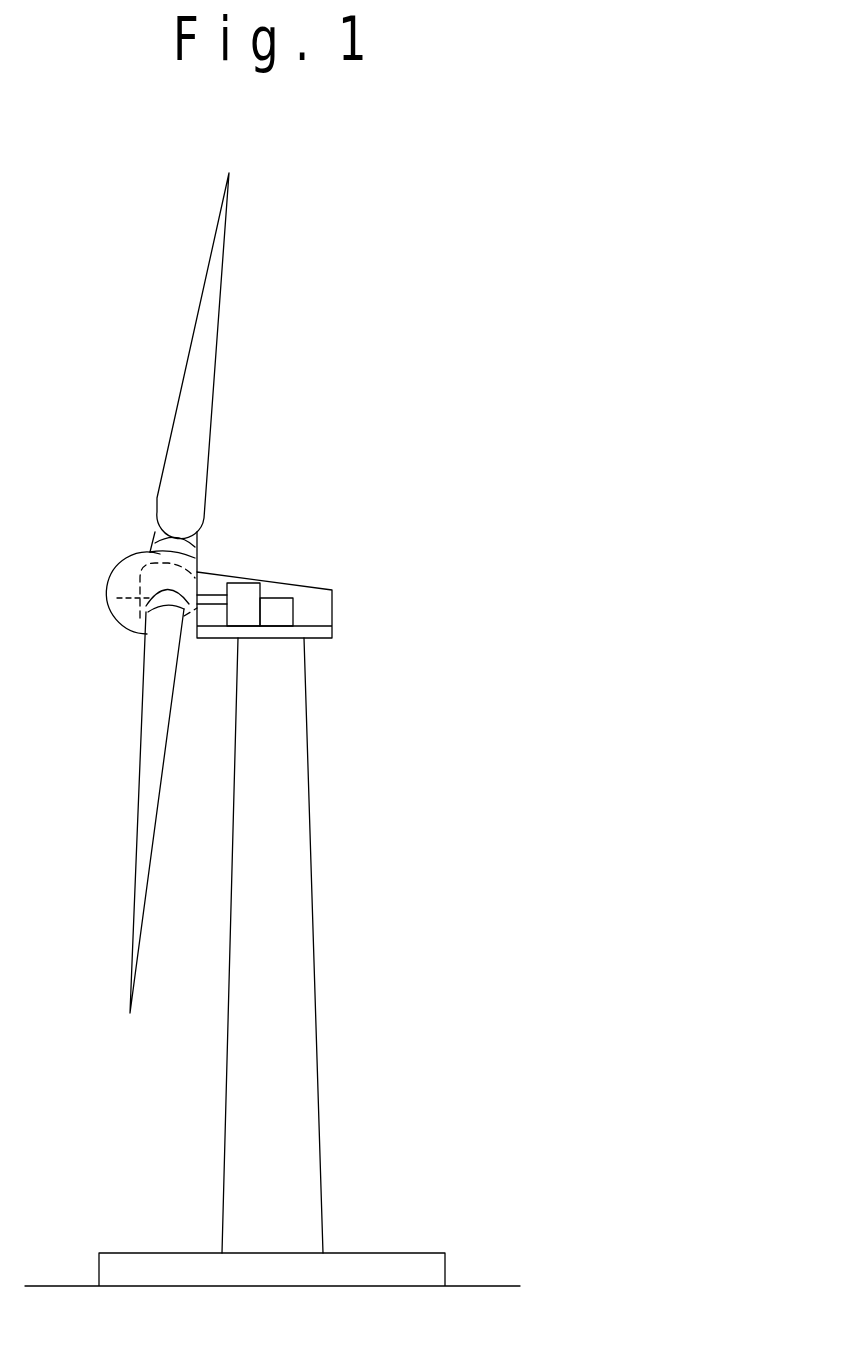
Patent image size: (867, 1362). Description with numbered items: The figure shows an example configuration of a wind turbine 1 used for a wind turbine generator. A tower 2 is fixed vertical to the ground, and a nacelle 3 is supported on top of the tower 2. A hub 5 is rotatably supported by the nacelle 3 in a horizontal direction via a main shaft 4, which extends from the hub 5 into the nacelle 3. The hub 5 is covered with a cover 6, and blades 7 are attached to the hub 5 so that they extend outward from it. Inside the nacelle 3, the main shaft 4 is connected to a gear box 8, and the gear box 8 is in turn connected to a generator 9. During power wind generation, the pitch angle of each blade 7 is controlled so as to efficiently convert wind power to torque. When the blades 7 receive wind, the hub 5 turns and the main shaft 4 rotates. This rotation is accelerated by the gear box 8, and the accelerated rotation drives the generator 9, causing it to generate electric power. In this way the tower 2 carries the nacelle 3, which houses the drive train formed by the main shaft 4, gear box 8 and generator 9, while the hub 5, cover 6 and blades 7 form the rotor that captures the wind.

The wind turbine 1 is at (482, 325).
The tower 2 is at (293, 830).
The nacelle 3 is at (295, 587).
The main shaft 4 is at (207, 603).
The hub 5 is at (110, 602).
The cover 6 is at (117, 572).
The blade 7 is at (180, 407).
The gear box 8 is at (242, 586).
The generator 9 is at (287, 612).